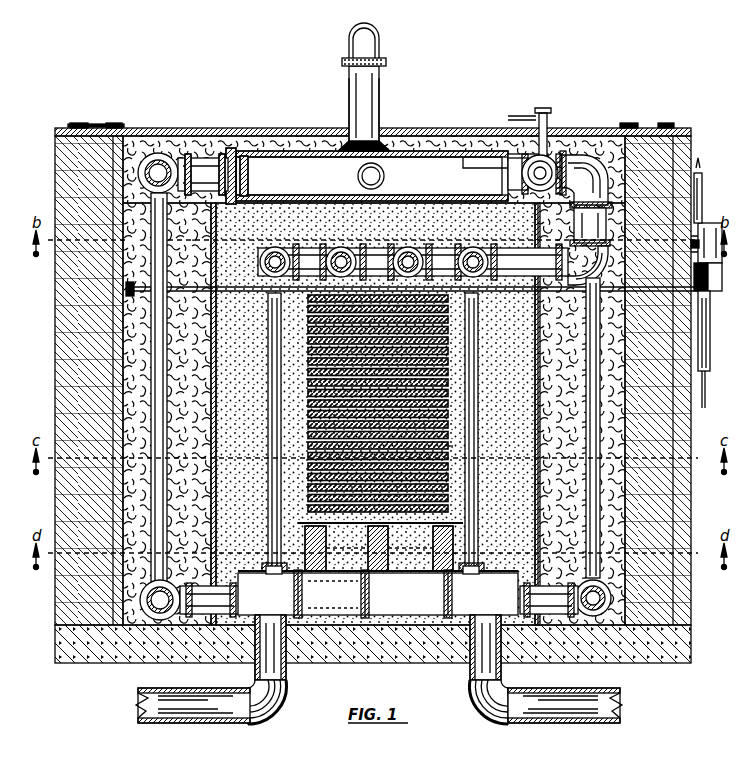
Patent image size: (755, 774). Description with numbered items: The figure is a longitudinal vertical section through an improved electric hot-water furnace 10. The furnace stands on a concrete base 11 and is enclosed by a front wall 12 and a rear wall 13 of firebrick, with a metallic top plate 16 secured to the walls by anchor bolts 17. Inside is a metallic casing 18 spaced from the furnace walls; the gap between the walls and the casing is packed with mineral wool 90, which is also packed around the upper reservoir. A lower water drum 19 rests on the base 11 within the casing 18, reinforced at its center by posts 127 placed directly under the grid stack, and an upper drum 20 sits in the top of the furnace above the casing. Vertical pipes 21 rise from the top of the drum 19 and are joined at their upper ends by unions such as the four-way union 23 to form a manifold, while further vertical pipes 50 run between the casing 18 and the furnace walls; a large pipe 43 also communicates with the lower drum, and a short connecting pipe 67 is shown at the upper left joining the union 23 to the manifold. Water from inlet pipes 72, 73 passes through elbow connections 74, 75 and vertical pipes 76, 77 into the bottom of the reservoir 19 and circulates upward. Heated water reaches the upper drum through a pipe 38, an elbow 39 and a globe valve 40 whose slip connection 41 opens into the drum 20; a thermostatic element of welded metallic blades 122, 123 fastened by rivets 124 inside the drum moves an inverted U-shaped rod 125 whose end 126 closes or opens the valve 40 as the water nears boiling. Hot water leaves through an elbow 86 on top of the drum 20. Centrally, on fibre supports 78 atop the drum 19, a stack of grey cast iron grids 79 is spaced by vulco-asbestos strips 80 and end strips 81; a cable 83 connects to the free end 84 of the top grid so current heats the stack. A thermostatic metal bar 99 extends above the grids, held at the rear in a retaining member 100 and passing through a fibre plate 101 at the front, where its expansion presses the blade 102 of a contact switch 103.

The furnace housing 10 is at (688, 596).
The concrete base 11 is at (640, 648).
The front wall 12 is at (683, 485).
The rear wall 13 is at (48, 400).
The metallic top plate 16 is at (407, 135).
The anchor bolts 17 is at (92, 118).
The metallic casing 18 is at (250, 160).
The water drum 19 is at (378, 592).
The drum 20 is at (408, 180).
The pipes 21 is at (262, 410).
The four-way union 23 is at (152, 148).
The pipe 38 is at (600, 280).
The elbow 39 is at (582, 178).
The globe valve 40 is at (577, 212).
The slip connection 41 is at (533, 145).
The large pipe 43 is at (152, 612).
The vertical pipes 50 is at (150, 312).
The connecting pipe 67 is at (190, 150).
The water inlet pipe 72 is at (212, 716).
The water inlet pipe 73 is at (566, 715).
The elbow connection 74 is at (272, 700).
The elbow connection 75 is at (480, 708).
The vertical pipe 76 is at (278, 660).
The vertical pipe 77 is at (462, 665).
The fibre supports 78 is at (320, 552).
The grids 79 is at (322, 522).
The strips 80 is at (380, 530).
The end strips 81 is at (425, 545).
The cable 83 is at (445, 440).
The free end 84 is at (430, 288).
The elbow 86 is at (372, 82).
The mineral wool 90 is at (75, 195).
The thermostatic metal bar 99 is at (216, 282).
The retaining member 100 is at (120, 281).
The fibre plate 101 is at (700, 300).
The blade 102 is at (705, 330).
The contact switch 103 is at (702, 255).
The metallic blade 122 is at (462, 148).
The metallic blade 123 is at (470, 150).
The rivets 124 is at (238, 145).
The inverted U-shaped rod 125 is at (505, 140).
The end 126 is at (536, 165).
The posts 127 is at (312, 598).